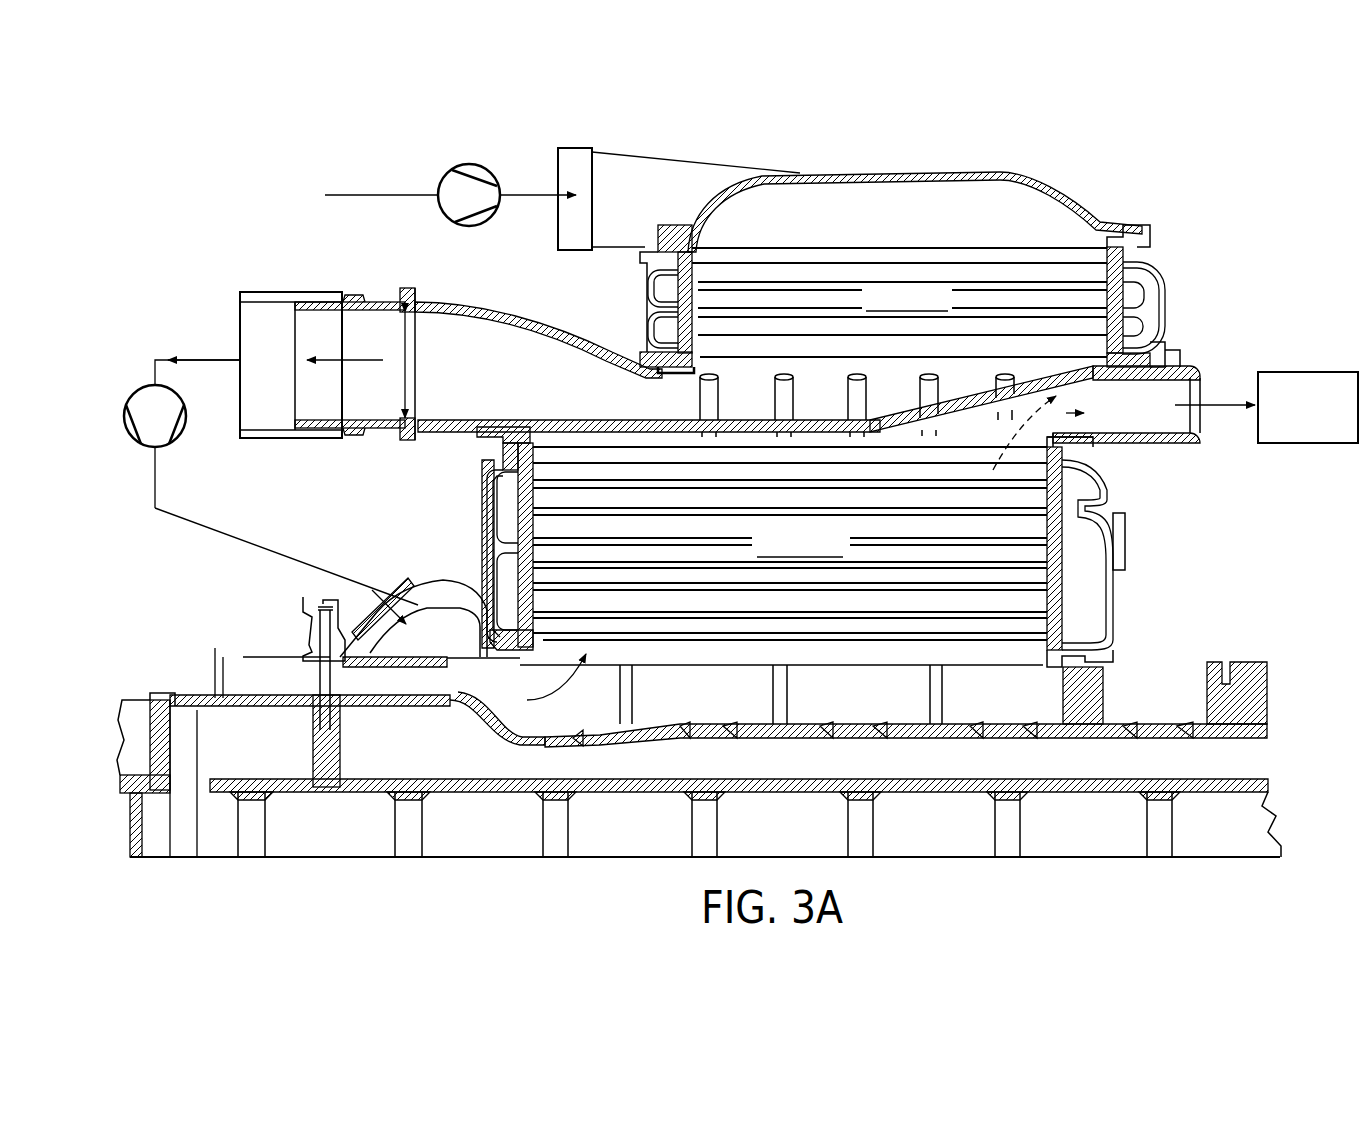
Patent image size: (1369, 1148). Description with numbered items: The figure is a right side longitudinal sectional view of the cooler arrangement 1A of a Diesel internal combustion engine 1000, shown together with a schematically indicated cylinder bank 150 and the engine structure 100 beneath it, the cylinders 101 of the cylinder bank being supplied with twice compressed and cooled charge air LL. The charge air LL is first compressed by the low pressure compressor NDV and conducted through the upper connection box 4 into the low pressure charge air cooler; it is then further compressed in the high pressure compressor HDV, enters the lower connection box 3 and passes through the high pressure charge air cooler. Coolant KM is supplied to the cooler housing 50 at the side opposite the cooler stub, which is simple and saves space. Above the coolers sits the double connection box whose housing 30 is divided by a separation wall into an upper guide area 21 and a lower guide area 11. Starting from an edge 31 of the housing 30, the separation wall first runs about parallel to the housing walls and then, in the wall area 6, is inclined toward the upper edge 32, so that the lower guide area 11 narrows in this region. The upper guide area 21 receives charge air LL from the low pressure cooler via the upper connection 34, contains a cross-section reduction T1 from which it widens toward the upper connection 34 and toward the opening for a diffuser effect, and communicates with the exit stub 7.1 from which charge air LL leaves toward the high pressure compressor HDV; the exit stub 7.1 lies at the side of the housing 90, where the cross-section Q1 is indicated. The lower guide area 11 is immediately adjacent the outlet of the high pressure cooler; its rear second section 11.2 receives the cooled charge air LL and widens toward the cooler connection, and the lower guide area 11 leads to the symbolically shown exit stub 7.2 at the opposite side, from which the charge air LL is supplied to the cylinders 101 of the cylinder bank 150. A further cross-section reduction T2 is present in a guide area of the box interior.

The cooler arrangement 1A is at (1064, 147).
The upper connection box 4 is at (736, 181).
The wall area 6 is at (873, 257).
The cooler housing 50 is at (1136, 256).
The upper connection 34 is at (1139, 366).
The upper edge 32 is at (1191, 370).
The housing 30 is at (1201, 393).
The exit stub 7.2 is at (1191, 423).
The edge 31 is at (451, 410).
The cylinder bank 150 is at (1288, 419).
The lower guide area 11 is at (1127, 404).
The second section 11.2 is at (1115, 429).
The upper guide area 21 is at (878, 404).
The exit stub 7.1 is at (483, 304).
The internal combustion engine 1000 is at (212, 262).
The housing 90 is at (486, 478).
The lower connection box 3 is at (439, 571).
The engine block 100 is at (1249, 692).
The cylinders 101 is at (1062, 820).
The low pressure compressor NDV is at (451, 172).
The high pressure compressor HDV is at (125, 436).
The charge air LL is at (206, 532).
The coolant KM is at (1192, 268).
The cross section Q1 is at (404, 341).
The cross-section reduction T1 is at (660, 380).
The cross-section reduction T2 is at (1060, 412).